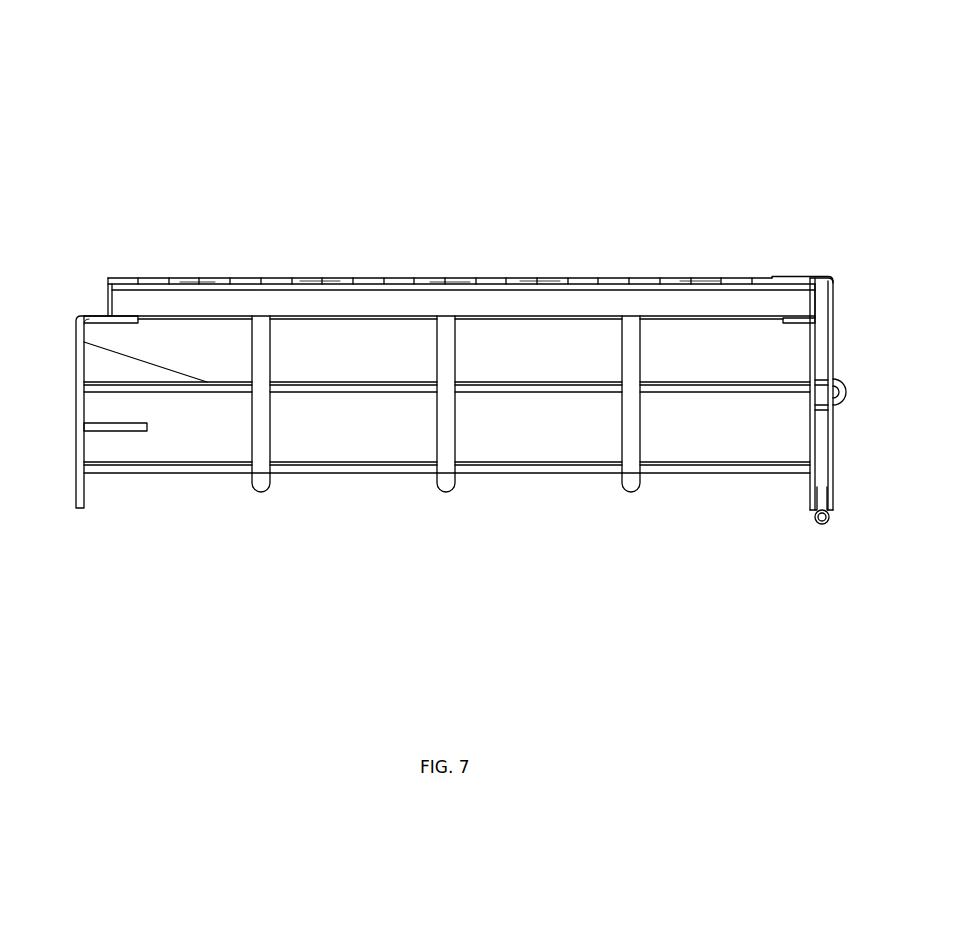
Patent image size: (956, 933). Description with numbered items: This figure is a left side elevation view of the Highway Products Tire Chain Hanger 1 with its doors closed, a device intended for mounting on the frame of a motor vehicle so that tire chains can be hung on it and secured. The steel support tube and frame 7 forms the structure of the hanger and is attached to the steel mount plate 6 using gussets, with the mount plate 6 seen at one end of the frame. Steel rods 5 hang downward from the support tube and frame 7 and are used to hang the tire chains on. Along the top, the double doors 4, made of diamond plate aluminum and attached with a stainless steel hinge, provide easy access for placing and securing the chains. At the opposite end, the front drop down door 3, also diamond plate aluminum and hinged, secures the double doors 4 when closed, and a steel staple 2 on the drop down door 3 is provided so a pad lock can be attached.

The tire chain hanger 1 is at (489, 55).
The steel staple 2 is at (858, 365).
The front drop down door 3 is at (846, 401).
The double doors 4 is at (435, 293).
The steel rod 5 is at (474, 429).
The steel mount plate 6 is at (107, 449).
The steel support tube and frame 7 is at (449, 427).